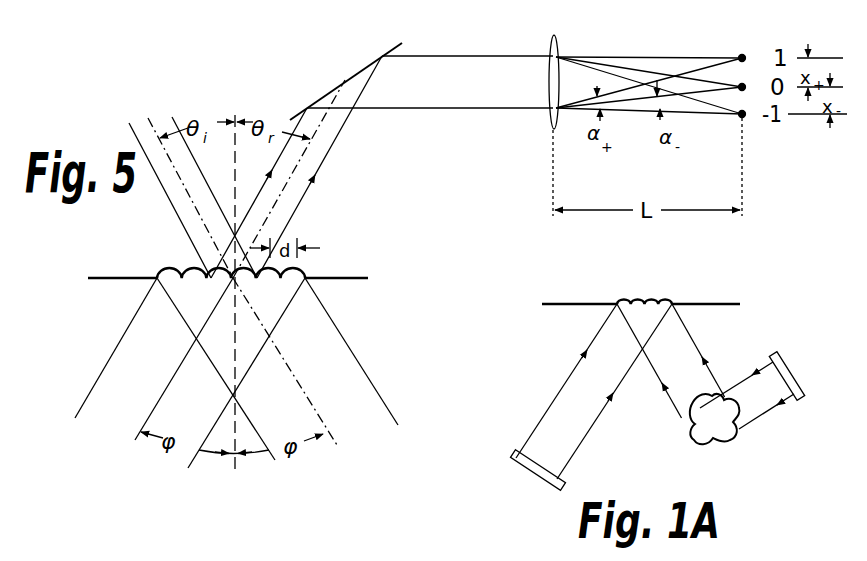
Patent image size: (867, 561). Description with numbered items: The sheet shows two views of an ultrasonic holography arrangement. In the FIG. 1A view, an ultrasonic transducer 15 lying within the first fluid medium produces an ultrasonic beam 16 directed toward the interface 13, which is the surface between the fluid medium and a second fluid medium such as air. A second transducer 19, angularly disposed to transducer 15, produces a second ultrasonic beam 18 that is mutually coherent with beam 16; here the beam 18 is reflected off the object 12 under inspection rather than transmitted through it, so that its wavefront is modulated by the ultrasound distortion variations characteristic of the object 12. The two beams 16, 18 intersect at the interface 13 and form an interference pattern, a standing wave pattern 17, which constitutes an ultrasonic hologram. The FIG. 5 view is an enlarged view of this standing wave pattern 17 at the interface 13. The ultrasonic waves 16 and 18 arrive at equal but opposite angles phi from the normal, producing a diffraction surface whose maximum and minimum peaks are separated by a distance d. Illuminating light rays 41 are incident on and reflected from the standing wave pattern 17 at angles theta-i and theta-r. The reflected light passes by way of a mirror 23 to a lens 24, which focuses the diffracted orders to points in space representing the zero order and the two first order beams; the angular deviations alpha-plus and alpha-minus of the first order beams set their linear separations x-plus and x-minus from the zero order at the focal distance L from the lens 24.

In FIG. 5, the illuminating light rays 41 is at (193, 181).
In FIG. 5, the interface 13 is at (118, 278).
In FIG. 1A, the interface 13 is at (589, 303).
In FIG. 5, the standing wave pattern 17 is at (312, 277).
In FIG. 1A, the standing wave pattern 17 is at (645, 302).
In FIG. 5, the ultrasonic beam 16 is at (108, 360).
In FIG. 1A, the ultrasonic beam 16 is at (571, 378).
In FIG. 5, the second ultrasonic beam 18 is at (357, 360).
In FIG. 1A, the second ultrasonic beam 18 is at (765, 412).
In FIG. 5, the mirror 23 is at (337, 87).
In FIG. 5, the lens 24 is at (551, 47).
In FIG. 1A, the ultrasonic transducer 15 is at (538, 479).
In FIG. 1A, the object 12 is at (697, 436).
In FIG. 1A, the transducer 19 is at (785, 358).